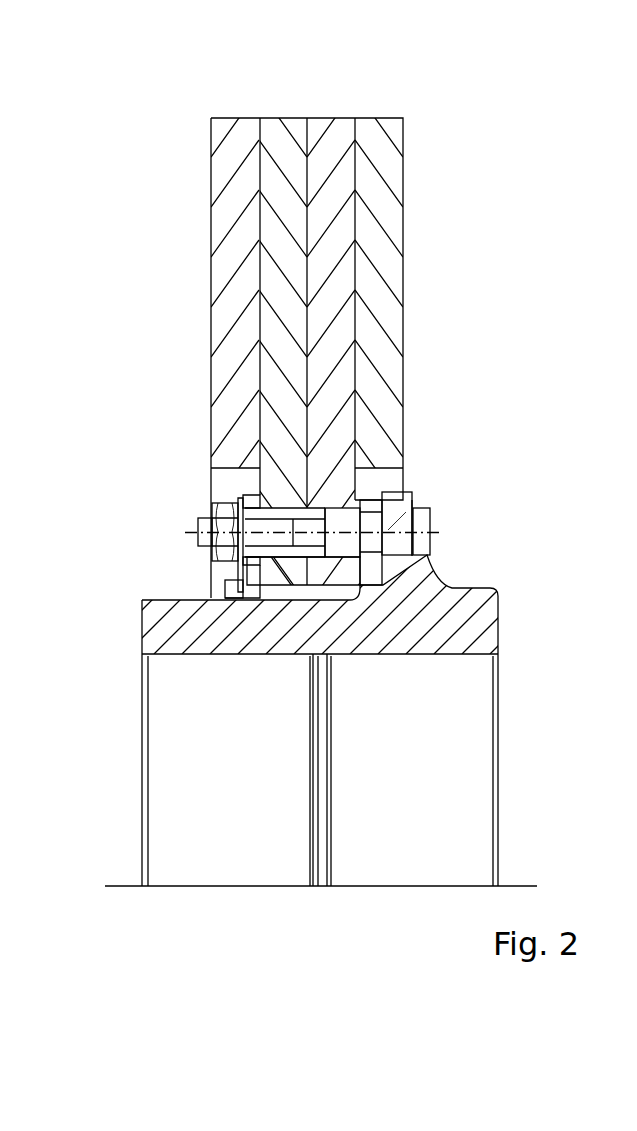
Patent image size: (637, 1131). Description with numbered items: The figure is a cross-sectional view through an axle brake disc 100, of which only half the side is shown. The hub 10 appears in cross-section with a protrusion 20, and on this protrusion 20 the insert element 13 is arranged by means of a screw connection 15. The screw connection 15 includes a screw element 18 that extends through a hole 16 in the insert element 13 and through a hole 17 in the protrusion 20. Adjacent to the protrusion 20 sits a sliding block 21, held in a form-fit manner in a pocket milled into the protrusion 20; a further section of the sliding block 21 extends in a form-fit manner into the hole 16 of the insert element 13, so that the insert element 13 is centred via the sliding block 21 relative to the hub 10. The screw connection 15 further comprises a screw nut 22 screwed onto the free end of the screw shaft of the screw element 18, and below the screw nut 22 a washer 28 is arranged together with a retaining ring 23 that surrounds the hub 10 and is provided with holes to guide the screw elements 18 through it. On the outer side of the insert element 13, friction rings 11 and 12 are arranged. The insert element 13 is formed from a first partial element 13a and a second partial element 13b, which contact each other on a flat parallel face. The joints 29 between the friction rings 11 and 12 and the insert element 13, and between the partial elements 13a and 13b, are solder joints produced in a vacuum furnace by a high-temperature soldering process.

The axle brake disc 100 is at (128, 197).
The hub 10 is at (500, 682).
The friction ring 11 is at (213, 353).
The friction ring 12 is at (395, 342).
The insert element 13 is at (358, 64).
The first partial element 13a is at (283, 127).
The second partial element 13b is at (318, 128).
The screw connection 15 is at (447, 535).
The hole 16 is at (318, 507).
The hole 17 is at (397, 500).
The screw element 18 is at (428, 520).
The protrusion 20 is at (422, 502).
The sliding block 21 is at (376, 558).
The screw nut 22 is at (217, 508).
The retaining ring 23 is at (252, 490).
The washer 28 is at (240, 566).
The joints 29 is at (355, 337).